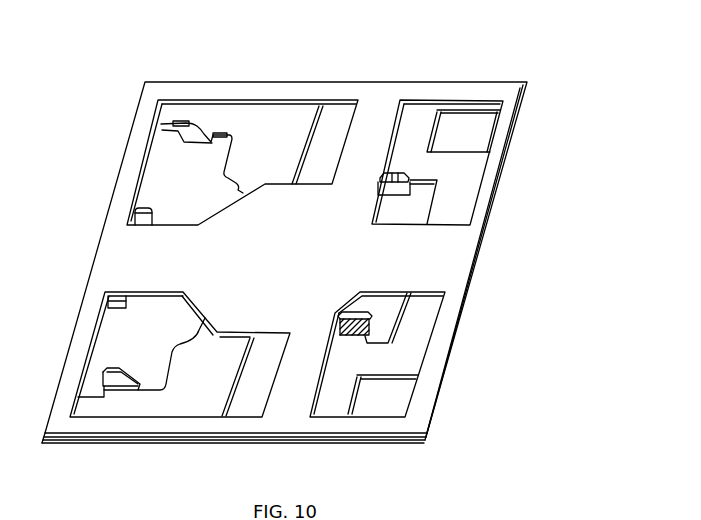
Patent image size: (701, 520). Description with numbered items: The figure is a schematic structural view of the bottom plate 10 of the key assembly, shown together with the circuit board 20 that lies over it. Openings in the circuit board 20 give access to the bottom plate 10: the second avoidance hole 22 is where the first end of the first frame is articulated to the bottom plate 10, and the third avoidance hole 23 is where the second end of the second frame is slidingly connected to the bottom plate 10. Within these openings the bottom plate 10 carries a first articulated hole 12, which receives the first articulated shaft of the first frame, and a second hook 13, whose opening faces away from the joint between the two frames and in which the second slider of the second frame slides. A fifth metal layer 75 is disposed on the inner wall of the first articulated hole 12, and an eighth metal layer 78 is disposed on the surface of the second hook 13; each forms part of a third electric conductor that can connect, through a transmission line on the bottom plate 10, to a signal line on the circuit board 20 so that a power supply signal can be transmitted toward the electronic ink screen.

The bottom plate 10 is at (443, 393).
The circuit board 20 is at (430, 430).
The first articulated hole 12 is at (133, 370).
The second hook 13 is at (393, 188).
The second avoidance hole 22 is at (197, 390).
The third avoidance hole 23 is at (420, 325).
The fifth metal layer 75 is at (110, 385).
The eighth metal layer 78 is at (353, 337).